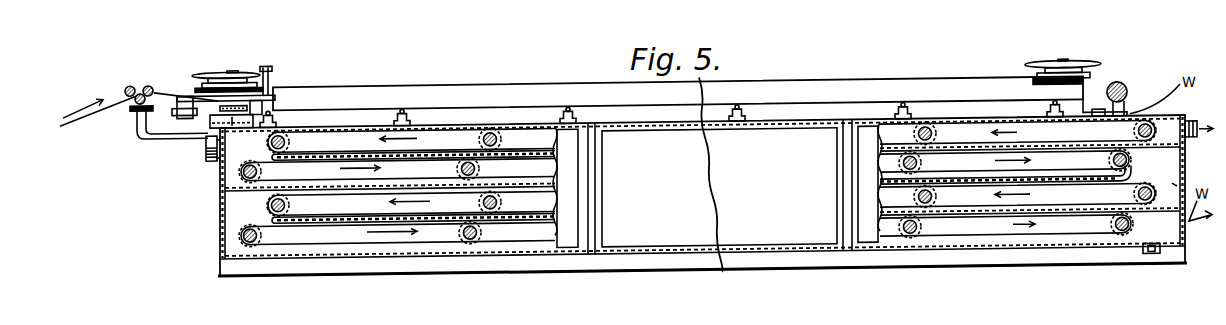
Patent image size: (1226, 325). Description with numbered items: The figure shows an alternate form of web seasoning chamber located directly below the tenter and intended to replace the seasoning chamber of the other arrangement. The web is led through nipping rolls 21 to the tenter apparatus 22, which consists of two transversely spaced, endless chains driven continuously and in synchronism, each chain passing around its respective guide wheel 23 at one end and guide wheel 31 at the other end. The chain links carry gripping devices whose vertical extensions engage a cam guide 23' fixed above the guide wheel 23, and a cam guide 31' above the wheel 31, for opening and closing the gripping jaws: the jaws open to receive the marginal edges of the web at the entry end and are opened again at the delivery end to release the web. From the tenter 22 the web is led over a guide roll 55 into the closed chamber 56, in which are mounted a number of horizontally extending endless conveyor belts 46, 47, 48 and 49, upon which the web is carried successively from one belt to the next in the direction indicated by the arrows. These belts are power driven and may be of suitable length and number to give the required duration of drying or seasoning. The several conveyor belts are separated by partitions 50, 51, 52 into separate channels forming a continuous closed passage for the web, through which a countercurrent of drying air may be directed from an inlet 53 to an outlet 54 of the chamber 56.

The nipping rolls 21 is at (135, 95).
The tenter apparatus 22 is at (318, 99).
The guide wheel 23 is at (209, 94).
The cam guide 23' is at (226, 60).
The guide wheel 31 is at (1082, 74).
The cam guide 31' is at (1077, 52).
The endless conveyor belt 46 is at (340, 150).
The endless conveyor belt 47 is at (331, 179).
The endless conveyor belt 48 is at (353, 214).
The endless conveyor belt 49 is at (353, 243).
The partition 50 is at (1137, 159).
The partition 51 is at (1033, 195).
The partition 52 is at (1031, 231).
The inlet 53 is at (1152, 267).
The outlet 54 is at (1197, 142).
The guide roll 55 is at (1128, 125).
The closed chamber 56 is at (1176, 198).